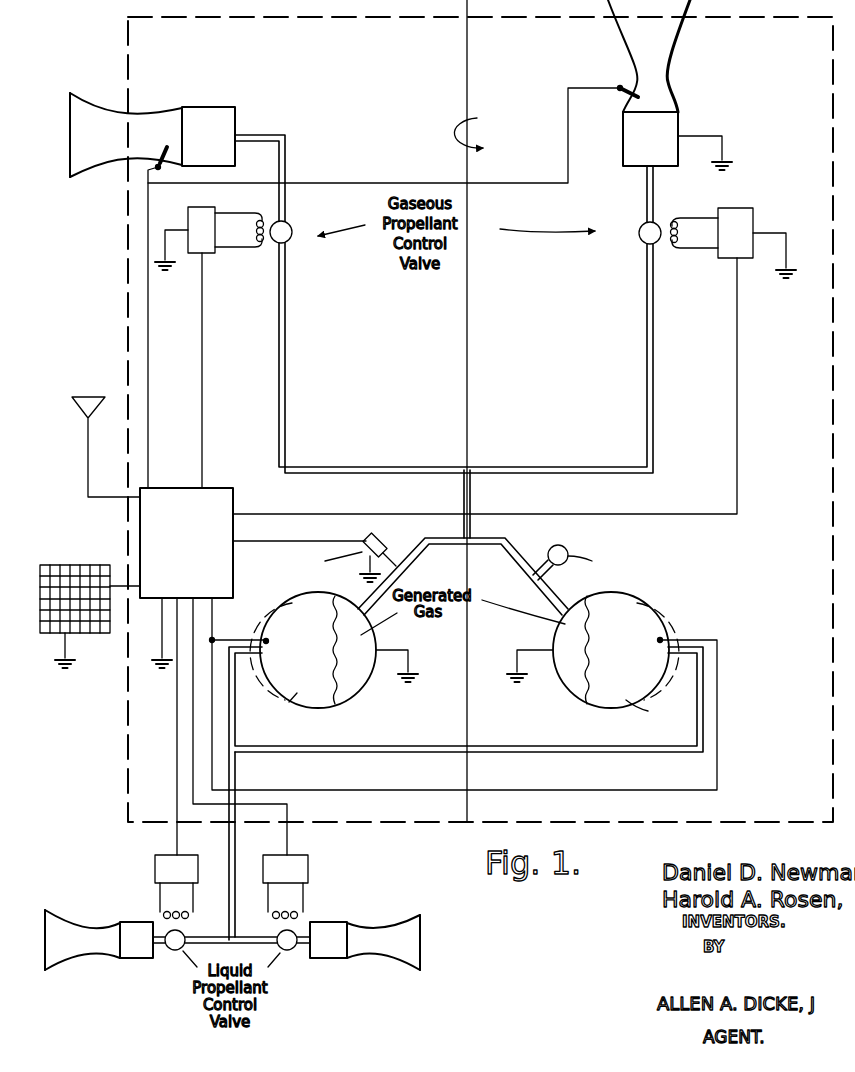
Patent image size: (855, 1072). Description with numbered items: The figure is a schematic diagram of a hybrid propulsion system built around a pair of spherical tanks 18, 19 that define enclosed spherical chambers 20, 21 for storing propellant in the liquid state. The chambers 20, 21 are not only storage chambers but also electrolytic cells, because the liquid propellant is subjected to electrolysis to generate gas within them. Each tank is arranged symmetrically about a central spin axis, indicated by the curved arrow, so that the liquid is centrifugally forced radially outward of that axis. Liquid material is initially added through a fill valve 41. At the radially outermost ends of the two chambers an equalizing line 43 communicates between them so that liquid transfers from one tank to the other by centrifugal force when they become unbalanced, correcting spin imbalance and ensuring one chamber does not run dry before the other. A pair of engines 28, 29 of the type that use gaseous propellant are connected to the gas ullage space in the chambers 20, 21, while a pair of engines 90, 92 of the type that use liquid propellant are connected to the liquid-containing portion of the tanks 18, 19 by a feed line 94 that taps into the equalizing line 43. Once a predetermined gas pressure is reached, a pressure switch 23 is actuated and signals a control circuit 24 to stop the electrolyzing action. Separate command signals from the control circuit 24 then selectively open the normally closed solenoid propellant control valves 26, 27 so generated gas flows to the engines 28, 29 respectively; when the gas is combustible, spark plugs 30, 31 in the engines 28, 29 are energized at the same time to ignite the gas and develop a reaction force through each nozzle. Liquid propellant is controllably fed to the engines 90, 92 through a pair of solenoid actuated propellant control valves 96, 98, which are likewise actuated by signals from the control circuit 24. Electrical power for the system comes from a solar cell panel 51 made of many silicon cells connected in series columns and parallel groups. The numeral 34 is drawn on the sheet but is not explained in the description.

The spherical tank 18 is at (278, 613).
The spherical tank 19 is at (655, 616).
The spherical chamber 20 is at (290, 656).
The spherical chamber 21 is at (608, 656).
The pressure switch 23 is at (371, 541).
The control circuit 24 is at (140, 533).
The propellant control valve 26 is at (268, 254).
The propellant control valve 27 is at (659, 263).
The engine 28 is at (230, 110).
The engine 29 is at (670, 85).
The spark plug 30 is at (147, 170).
The spark plug 31 is at (625, 84).
The liquid level sensor line 34 is at (662, 625).
The fill valve 41 is at (556, 545).
The equalizing line 43 is at (422, 749).
The solar cell panel 51 is at (100, 622).
The engine 90 is at (136, 955).
The engine 92 is at (335, 958).
The feed line 94 is at (237, 769).
The propellant control valve 96 is at (156, 911).
The propellant control valve 98 is at (311, 916).